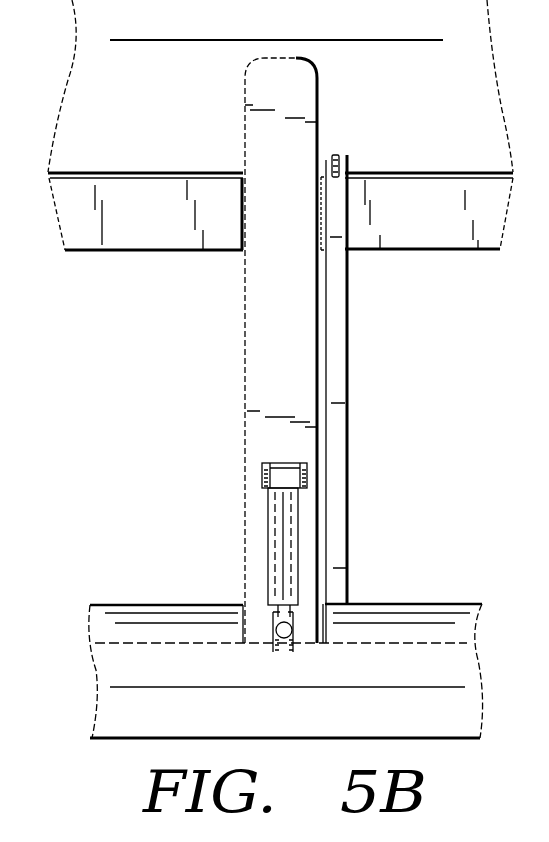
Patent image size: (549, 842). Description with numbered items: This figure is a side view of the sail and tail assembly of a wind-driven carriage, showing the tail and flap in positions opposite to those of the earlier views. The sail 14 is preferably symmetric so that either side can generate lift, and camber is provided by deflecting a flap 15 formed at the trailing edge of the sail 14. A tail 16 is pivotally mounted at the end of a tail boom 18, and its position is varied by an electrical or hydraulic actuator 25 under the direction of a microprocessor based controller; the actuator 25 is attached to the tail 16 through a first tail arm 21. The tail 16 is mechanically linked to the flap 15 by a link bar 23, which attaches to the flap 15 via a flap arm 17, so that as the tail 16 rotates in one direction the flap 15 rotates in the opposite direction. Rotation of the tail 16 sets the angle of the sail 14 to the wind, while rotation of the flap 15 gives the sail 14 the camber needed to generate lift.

The sail 14 is at (168, 95).
The flap 15 is at (170, 222).
The tail 16 is at (194, 726).
The flap arm 17 is at (337, 156).
The tail boom 18 is at (245, 362).
The first tail arm 21 is at (280, 630).
The link bar 23 is at (348, 362).
The actuator 25 is at (275, 527).